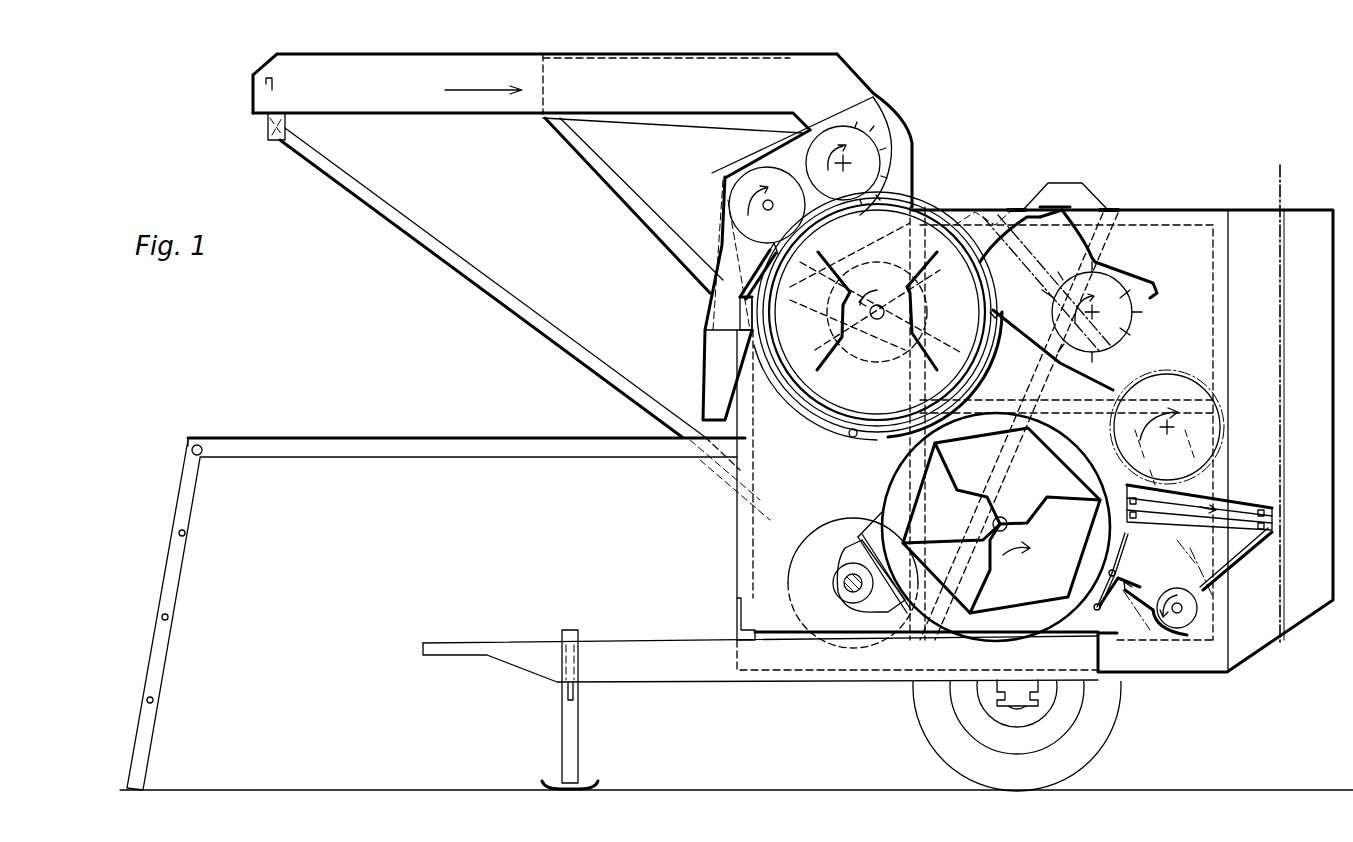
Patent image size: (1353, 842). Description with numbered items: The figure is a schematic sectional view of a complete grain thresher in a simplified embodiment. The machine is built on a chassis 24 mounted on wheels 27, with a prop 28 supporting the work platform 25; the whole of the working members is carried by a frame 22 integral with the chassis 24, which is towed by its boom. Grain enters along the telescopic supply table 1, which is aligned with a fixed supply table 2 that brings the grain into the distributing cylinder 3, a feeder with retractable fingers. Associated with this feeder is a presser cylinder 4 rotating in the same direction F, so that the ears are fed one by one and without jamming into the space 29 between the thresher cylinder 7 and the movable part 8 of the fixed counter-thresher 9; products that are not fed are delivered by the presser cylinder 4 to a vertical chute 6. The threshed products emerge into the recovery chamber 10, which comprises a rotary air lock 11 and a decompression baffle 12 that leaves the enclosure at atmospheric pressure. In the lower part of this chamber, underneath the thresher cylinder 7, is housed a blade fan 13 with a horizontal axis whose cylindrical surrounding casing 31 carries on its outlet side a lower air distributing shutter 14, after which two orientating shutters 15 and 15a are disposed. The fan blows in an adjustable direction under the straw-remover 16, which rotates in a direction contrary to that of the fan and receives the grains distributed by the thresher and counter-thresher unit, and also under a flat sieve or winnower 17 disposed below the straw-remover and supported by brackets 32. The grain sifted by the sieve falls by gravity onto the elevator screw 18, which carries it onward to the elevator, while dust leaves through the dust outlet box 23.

The telescopic supply table 1 is at (425, 102).
The fixed supply table 2 is at (690, 102).
The distributing cylinder 3 is at (868, 157).
The presser cylinder 4 is at (740, 192).
The vertical chute 6 is at (713, 363).
The space 29 is at (775, 352).
The thresher cylinder 7 is at (877, 416).
The movable part of the counter-thresher 8 is at (800, 418).
The fixed counter-thresher 9 is at (895, 432).
The recovery chamber 10 is at (1034, 300).
The rotary air lock 11 is at (1090, 292).
The decompression baffle 12 is at (1063, 192).
The frame 22 is at (1170, 218).
The dust outlet box 23 is at (1301, 405).
The straw-remover 16 is at (1167, 427).
The flat sieve 17 is at (1266, 511).
The brackets 32 is at (1255, 555).
The elevator screw 18 is at (1182, 620).
The lower air distributing shutter 14 is at (1100, 600).
The orientating shutter 15a is at (1122, 548).
The orientating shutter 15 is at (1125, 607).
The blade fan 13 is at (1030, 620).
The cylindrical surrounding casing 31 is at (948, 625).
The work platform 25 is at (525, 438).
The chassis 24 is at (670, 653).
The prop 28 is at (560, 735).
The wheels 27 is at (1100, 723).